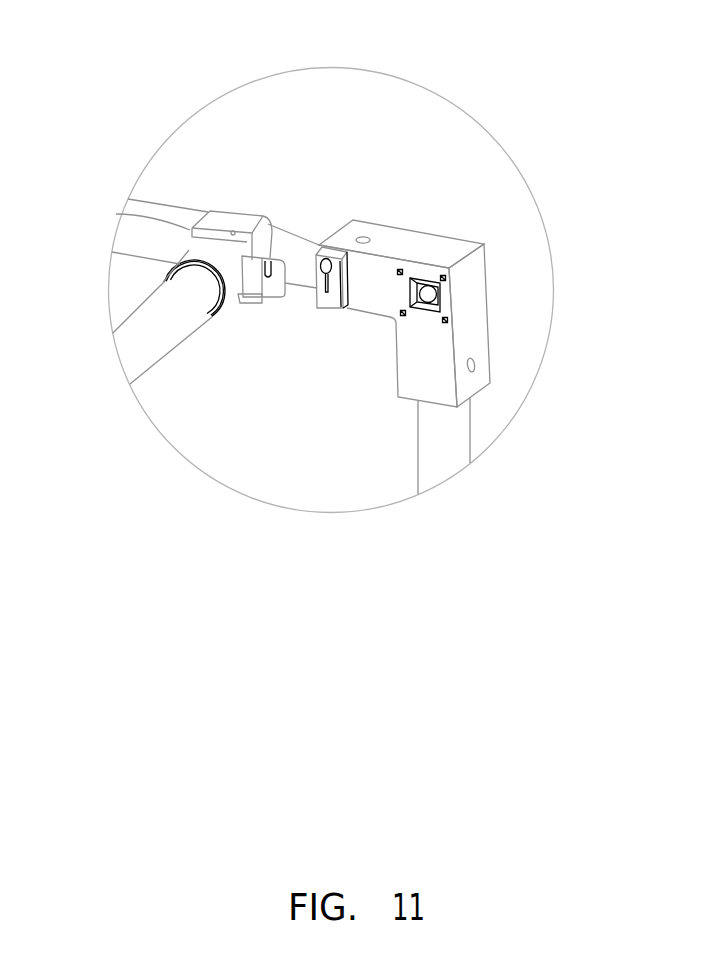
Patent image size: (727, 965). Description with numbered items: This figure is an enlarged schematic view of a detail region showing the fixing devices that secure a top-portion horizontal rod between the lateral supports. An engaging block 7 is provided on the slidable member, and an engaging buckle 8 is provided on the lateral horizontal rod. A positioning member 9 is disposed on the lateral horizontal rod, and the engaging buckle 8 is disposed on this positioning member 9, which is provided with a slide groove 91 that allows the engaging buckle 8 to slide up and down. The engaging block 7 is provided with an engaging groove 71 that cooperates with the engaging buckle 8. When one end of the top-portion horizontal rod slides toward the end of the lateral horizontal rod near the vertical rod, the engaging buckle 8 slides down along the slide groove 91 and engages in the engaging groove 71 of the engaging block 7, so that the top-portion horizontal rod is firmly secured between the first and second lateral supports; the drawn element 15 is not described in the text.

The pipe 15 is at (207, 252).
The engaging block 7 is at (270, 300).
The engaging groove 71 is at (265, 217).
The engaging buckle 8 is at (353, 233).
The positioning member 9 is at (348, 310).
The slide groove 91 is at (326, 264).